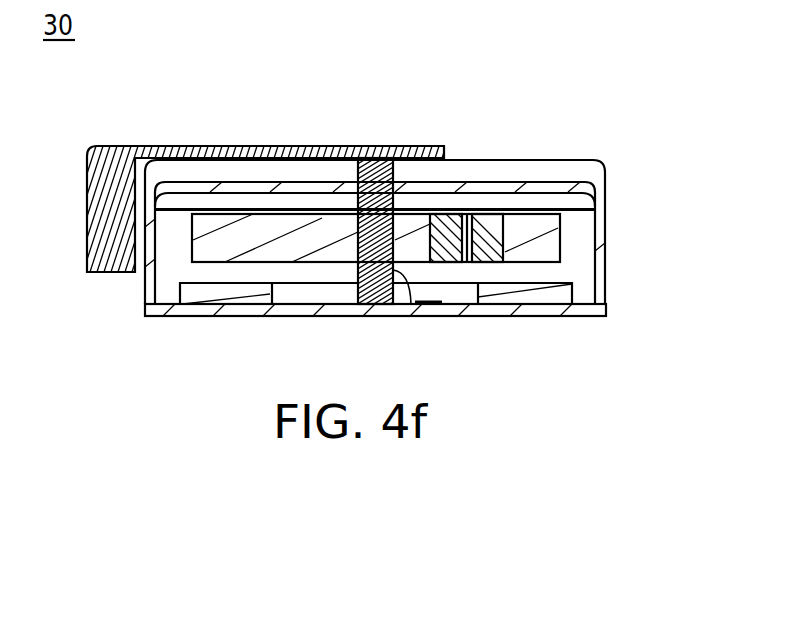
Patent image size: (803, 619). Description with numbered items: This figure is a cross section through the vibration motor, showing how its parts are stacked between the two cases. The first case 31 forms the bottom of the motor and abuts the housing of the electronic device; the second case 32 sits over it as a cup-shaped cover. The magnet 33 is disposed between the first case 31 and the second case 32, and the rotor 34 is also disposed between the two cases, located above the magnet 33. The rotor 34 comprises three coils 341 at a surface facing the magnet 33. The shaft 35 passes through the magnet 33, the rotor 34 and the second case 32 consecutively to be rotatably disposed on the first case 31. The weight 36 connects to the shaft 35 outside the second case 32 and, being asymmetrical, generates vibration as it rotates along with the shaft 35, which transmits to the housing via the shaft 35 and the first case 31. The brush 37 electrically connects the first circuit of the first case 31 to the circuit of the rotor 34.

The first case 31 is at (542, 317).
The second case 32 is at (597, 203).
The magnet 33 is at (563, 294).
The rotor 34 is at (547, 239).
The coils 341 is at (488, 220).
The shaft 35 is at (379, 166).
The weight 36 is at (272, 146).
The brush 37 is at (410, 306).